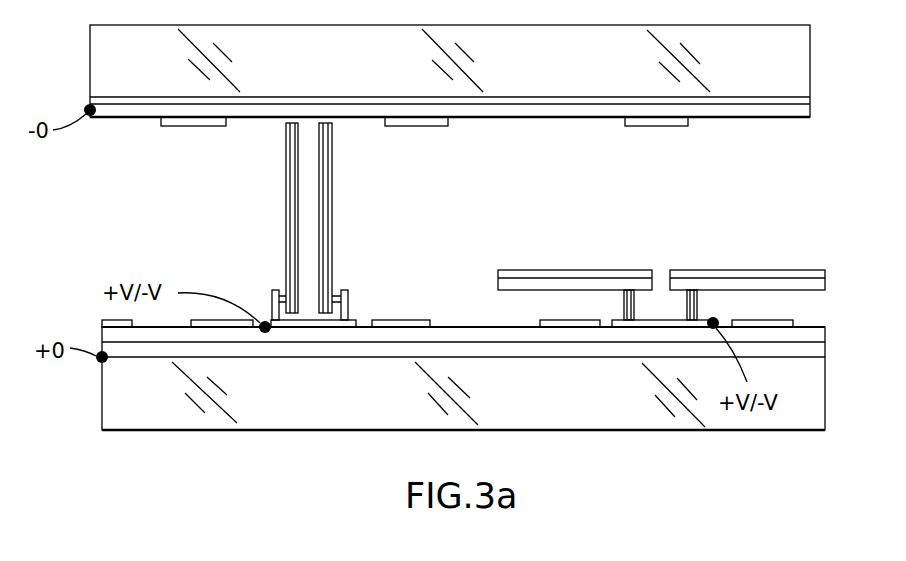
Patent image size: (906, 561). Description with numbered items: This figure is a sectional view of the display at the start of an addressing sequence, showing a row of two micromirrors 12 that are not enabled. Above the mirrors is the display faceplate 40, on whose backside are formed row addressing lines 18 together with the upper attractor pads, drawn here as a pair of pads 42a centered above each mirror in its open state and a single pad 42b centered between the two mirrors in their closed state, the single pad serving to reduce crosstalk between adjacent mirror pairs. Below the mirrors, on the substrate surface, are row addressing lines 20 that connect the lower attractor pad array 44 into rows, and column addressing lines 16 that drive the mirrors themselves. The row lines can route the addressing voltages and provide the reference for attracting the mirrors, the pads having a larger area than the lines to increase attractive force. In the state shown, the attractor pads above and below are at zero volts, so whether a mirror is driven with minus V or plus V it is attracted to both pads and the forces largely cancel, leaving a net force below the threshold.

The display faceplate 40 is at (763, 79).
The row addressing lines 18 is at (86, 107).
The pair of pads 42a is at (178, 126).
The single pad 42b is at (670, 127).
The row addressing lines 20 is at (125, 349).
The attractor pad array 44 is at (400, 319).
The column addressing lines 16 is at (288, 320).
The micromirrors 12 is at (688, 230).